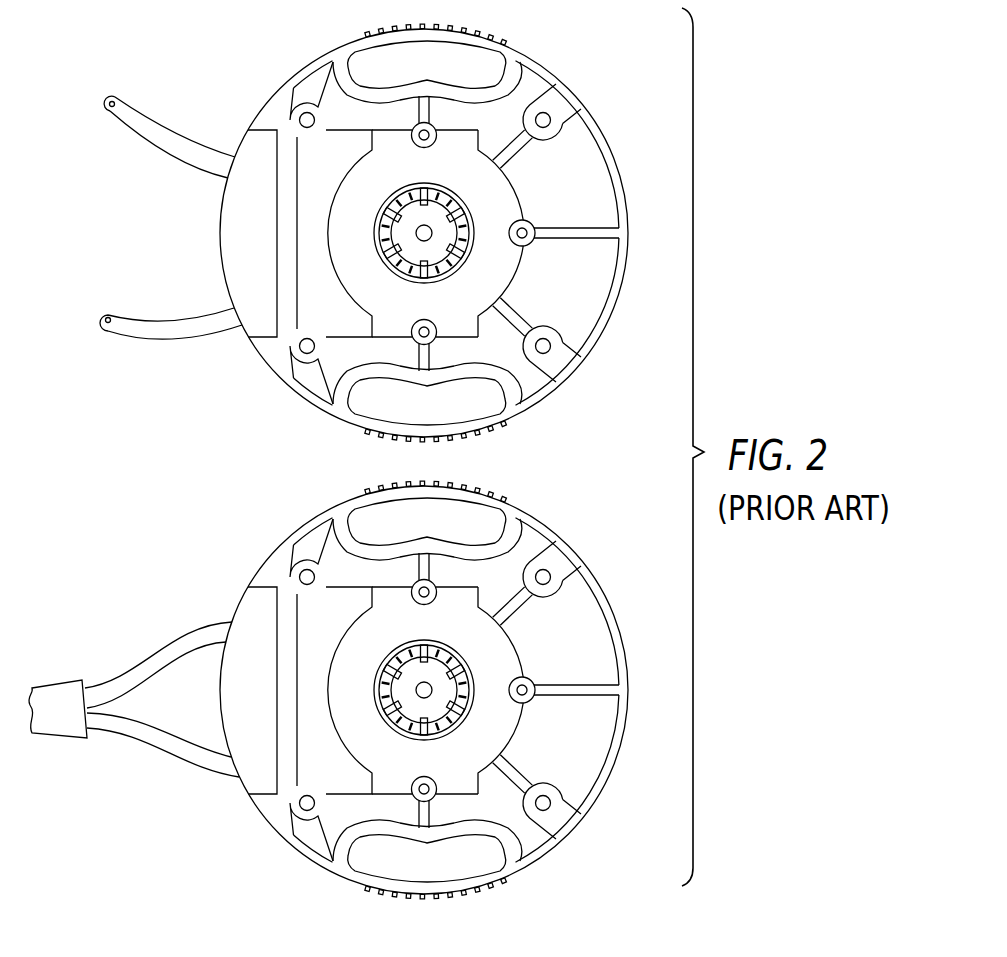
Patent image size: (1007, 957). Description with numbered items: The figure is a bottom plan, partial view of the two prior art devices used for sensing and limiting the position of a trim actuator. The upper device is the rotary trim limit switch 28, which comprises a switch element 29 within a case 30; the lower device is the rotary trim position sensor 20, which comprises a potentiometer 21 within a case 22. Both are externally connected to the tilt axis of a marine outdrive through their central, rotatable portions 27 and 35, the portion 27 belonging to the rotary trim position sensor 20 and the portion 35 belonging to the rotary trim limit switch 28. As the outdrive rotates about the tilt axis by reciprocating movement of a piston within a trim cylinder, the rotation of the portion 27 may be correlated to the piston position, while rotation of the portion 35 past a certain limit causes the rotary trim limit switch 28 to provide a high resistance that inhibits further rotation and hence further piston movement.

The rotary trim position sensor 20 is at (248, 523).
The potentiometer 21 is at (601, 564).
The case 22 is at (546, 516).
The central, rotatable portion 27 is at (480, 704).
The rotary trim limit switch 28 is at (248, 47).
The switch element 29 is at (601, 107).
The case 30 is at (546, 61).
The central, rotatable portion 35 is at (478, 247).